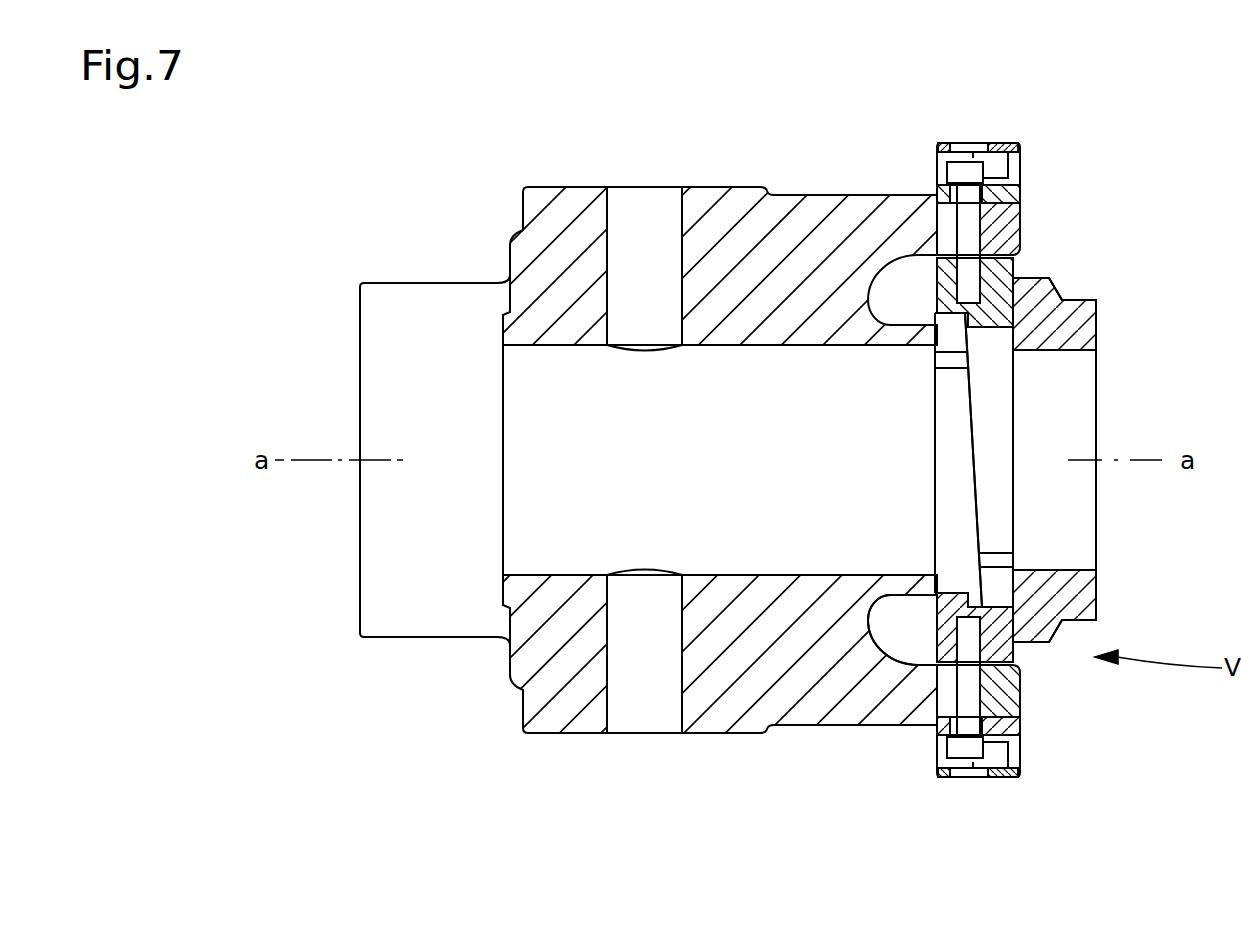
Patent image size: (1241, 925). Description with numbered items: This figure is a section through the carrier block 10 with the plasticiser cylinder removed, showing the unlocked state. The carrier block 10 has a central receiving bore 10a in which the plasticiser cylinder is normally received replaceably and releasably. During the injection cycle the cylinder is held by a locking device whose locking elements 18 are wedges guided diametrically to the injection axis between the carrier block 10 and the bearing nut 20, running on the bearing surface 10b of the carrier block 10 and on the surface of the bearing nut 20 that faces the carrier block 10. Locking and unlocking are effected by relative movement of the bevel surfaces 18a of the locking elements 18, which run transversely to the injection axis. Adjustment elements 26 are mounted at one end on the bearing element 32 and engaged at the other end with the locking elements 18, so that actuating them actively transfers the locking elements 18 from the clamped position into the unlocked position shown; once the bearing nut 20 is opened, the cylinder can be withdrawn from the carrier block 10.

The carrier block 10 is at (448, 300).
The receiving bore 10a is at (626, 499).
The bearing surface 10b is at (935, 607).
The locking elements 18 is at (997, 498).
The bevel surfaces 18a is at (970, 447).
The bearing nut 20 is at (1073, 327).
The adjustment elements 26 is at (968, 238).
The bearing element 32 is at (1018, 146).